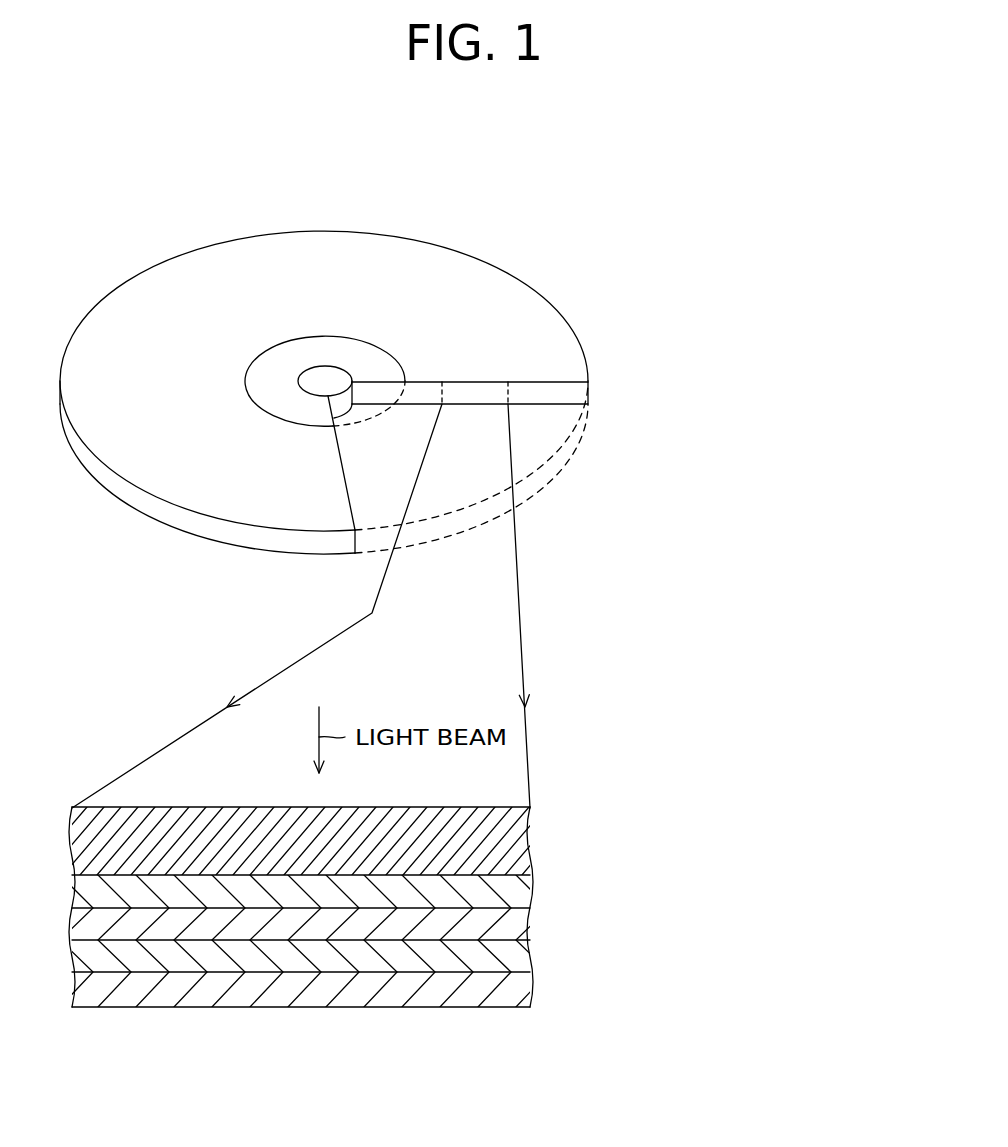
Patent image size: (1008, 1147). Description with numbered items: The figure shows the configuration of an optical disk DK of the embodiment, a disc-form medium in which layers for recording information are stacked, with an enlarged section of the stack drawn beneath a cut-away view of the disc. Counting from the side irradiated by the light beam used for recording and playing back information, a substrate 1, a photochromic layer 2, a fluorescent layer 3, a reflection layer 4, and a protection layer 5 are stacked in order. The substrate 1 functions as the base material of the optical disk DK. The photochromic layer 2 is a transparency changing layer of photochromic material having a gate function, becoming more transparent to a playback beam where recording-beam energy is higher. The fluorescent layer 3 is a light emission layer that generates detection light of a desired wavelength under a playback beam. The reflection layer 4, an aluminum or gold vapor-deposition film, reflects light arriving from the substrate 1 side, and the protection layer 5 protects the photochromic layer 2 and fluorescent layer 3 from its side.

The optical disk DK is at (495, 263).
The substrate 1 is at (522, 845).
The photochromic layer 2 is at (522, 890).
The fluorescent layer 3 is at (520, 926).
The reflection layer 4 is at (520, 957).
The protection layer 5 is at (522, 993).